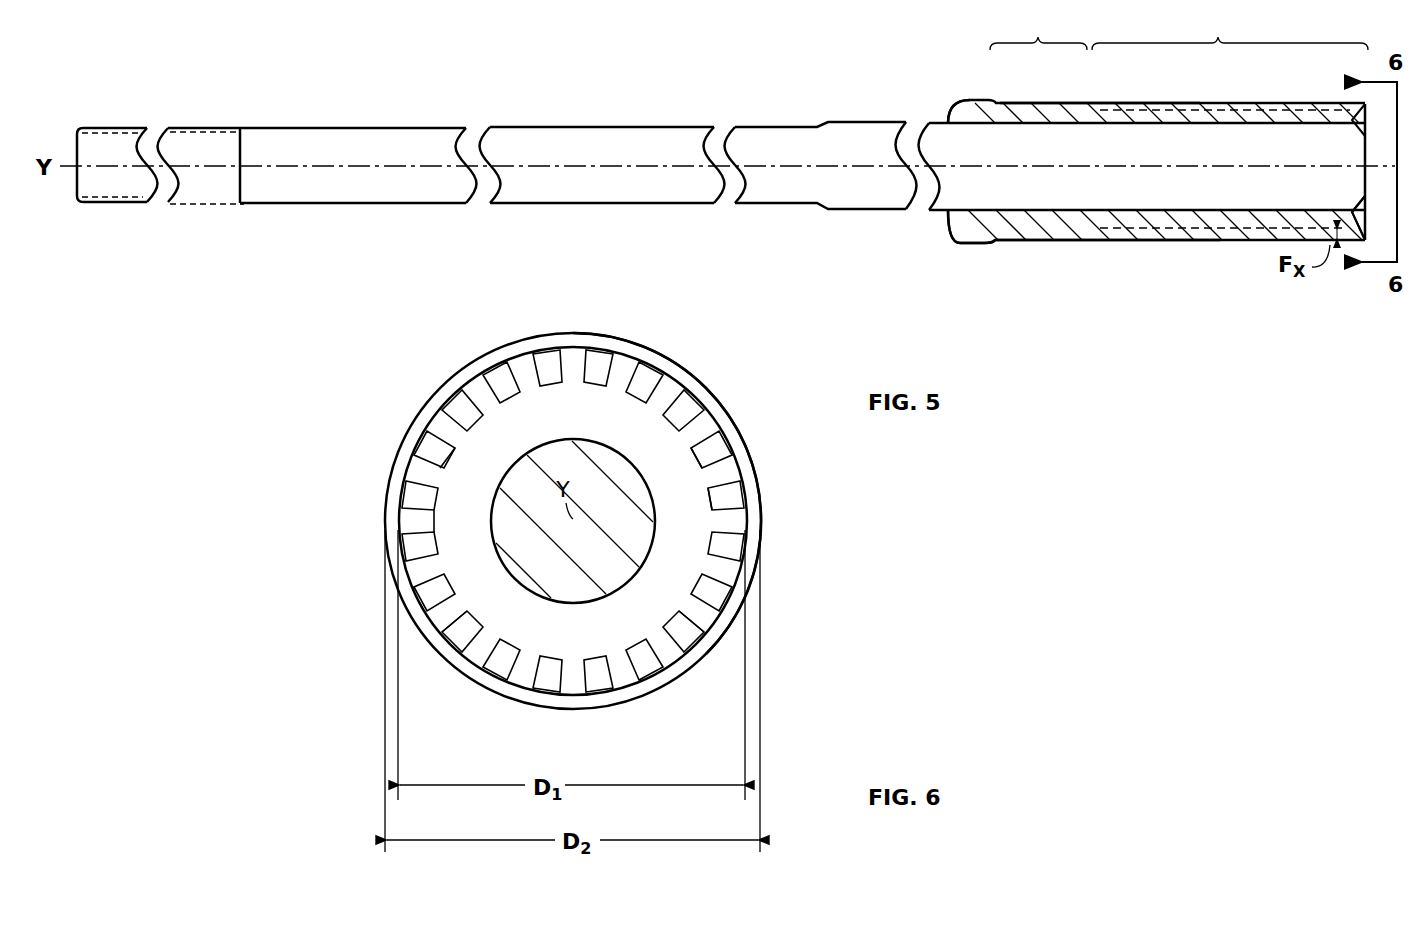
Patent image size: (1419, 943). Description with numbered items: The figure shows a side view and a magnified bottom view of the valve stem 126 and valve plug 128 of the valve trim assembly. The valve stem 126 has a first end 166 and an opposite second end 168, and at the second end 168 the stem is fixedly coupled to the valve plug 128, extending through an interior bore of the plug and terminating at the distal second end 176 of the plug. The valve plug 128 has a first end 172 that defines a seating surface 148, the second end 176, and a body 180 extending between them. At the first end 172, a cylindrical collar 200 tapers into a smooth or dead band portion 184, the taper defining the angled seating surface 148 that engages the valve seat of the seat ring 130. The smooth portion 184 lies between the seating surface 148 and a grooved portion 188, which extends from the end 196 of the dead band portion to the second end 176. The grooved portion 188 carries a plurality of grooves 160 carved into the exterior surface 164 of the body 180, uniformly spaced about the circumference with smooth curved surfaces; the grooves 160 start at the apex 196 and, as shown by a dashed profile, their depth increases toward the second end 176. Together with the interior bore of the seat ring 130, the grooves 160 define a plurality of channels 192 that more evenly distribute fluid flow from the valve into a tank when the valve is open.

In FIG. 5, the valve stem 126 is at (320, 140).
In FIG. 6, the valve stem 126 is at (633, 528).
In FIG. 5, the valve plug 128 is at (1097, 242).
In FIG. 6, the valve plug 128 is at (685, 563).
In FIG. 6, the seat ring 130 is at (440, 523).
In FIG. 5, the seating surface 148 is at (1000, 245).
In FIG. 6, the seating surface 148 is at (672, 362).
In FIG. 5, the grooves 160 is at (1228, 232).
In FIG. 6, the grooves 160 is at (493, 388).
In FIG. 5, the exterior surface 164 is at (1043, 243).
In FIG. 6, the exterior surface 164 is at (620, 693).
In FIG. 5, the first end 166 is at (92, 140).
In FIG. 5, the second end 168 is at (1305, 140).
In FIG. 5, the first end 172 is at (975, 105).
In FIG. 6, the first end 172 is at (452, 378).
In FIG. 5, the second end 176 is at (1352, 243).
In FIG. 5, the body 180 is at (1178, 242).
In FIG. 5, the smooth portion 184 is at (1038, 30).
In FIG. 5, the grooved portion 188 is at (1230, 30).
In FIG. 6, the channels 192 is at (430, 453).
In FIG. 5, the end of the dead band portion 196 is at (1093, 103).
In FIG. 5, the cylindrical collar 200 is at (975, 240).